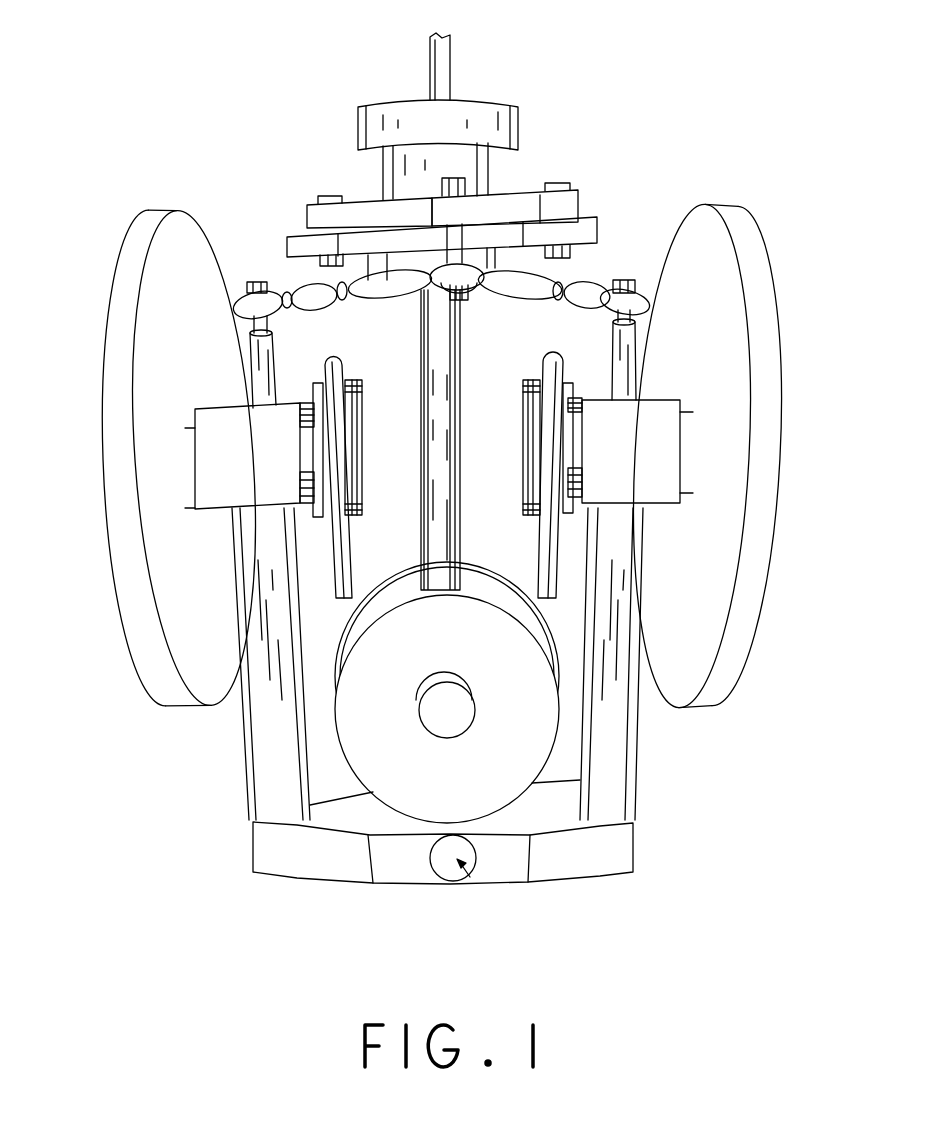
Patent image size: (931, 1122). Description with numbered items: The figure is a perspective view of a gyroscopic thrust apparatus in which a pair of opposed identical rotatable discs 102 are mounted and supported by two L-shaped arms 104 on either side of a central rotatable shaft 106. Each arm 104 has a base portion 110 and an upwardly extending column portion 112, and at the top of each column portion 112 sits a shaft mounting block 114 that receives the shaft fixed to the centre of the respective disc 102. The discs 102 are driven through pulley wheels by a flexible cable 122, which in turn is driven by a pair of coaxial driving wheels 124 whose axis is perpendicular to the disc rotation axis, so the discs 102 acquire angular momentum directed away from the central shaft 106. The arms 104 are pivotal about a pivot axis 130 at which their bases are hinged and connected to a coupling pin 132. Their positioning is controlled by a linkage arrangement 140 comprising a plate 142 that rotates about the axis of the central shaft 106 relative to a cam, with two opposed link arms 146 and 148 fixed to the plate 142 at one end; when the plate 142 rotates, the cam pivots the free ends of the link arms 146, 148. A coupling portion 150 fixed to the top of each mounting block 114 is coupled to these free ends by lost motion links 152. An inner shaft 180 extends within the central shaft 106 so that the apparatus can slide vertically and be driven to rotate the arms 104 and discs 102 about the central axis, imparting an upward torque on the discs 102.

The rotatable disc 102 is at (120, 368).
The arm 104 is at (275, 793).
The central rotatable shaft 106 is at (443, 440).
The base portion 110 is at (290, 858).
The column portion 112 is at (277, 572).
The shaft mounting block 114 is at (262, 476).
The flexible cable 122 is at (382, 570).
The driving wheel 124 is at (463, 650).
The pivot axis 130 is at (462, 883).
The coupling pin 132 is at (446, 900).
The linkage arrangement 140 is at (568, 125).
The plate 142 is at (587, 233).
The link arm 146 is at (370, 215).
The link arm 148 is at (513, 208).
The coupling portion 150 is at (254, 375).
The lost motion link 152 is at (363, 300).
The inner shaft 180 is at (437, 78).